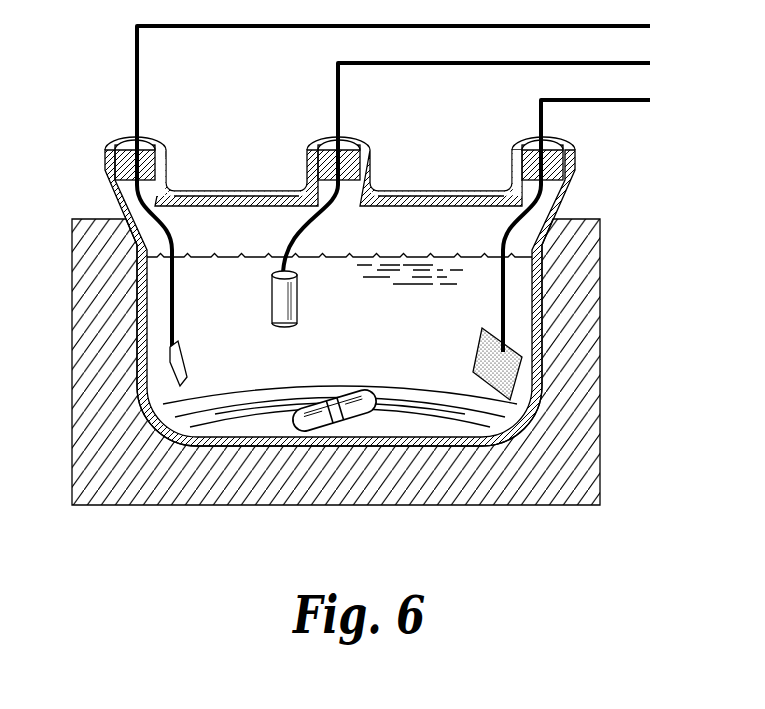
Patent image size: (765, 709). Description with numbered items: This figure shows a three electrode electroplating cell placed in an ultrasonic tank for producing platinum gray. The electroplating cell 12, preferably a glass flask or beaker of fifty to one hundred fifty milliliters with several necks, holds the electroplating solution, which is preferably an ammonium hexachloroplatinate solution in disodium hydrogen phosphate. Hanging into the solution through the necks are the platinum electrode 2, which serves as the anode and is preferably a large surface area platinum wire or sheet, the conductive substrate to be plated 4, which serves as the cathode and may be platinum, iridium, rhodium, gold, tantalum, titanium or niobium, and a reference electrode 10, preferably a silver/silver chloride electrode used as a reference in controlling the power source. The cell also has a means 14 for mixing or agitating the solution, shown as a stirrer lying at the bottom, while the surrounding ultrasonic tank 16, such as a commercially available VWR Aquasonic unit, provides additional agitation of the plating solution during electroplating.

The platinum electrode 2 is at (479, 351).
The conductive substrate to be plated 4 is at (178, 362).
The reference electrode 10 is at (297, 297).
The electroplating cell 12 is at (617, 302).
The means for mixing or agitating the electroplating solution 14 is at (370, 407).
The ultrasonic tank 16 is at (566, 481).